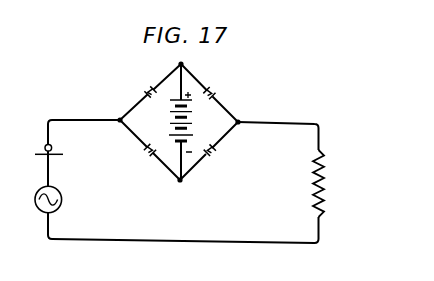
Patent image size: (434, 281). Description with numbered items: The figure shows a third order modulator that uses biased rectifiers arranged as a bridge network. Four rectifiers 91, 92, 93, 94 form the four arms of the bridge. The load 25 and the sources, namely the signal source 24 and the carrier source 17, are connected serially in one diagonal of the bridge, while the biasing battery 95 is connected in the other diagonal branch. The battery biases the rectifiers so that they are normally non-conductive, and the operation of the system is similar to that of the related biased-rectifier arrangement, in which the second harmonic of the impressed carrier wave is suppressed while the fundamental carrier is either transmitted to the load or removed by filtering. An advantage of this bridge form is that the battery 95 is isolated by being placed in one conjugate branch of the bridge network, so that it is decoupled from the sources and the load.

The carrier source 17 is at (34, 200).
The signal source 24 is at (38, 146).
The load 25 is at (310, 188).
The rectifier 91 is at (147, 88).
The rectifier 92 is at (215, 88).
The rectifier 93 is at (153, 158).
The rectifier 94 is at (212, 158).
The biasing battery 95 is at (193, 121).